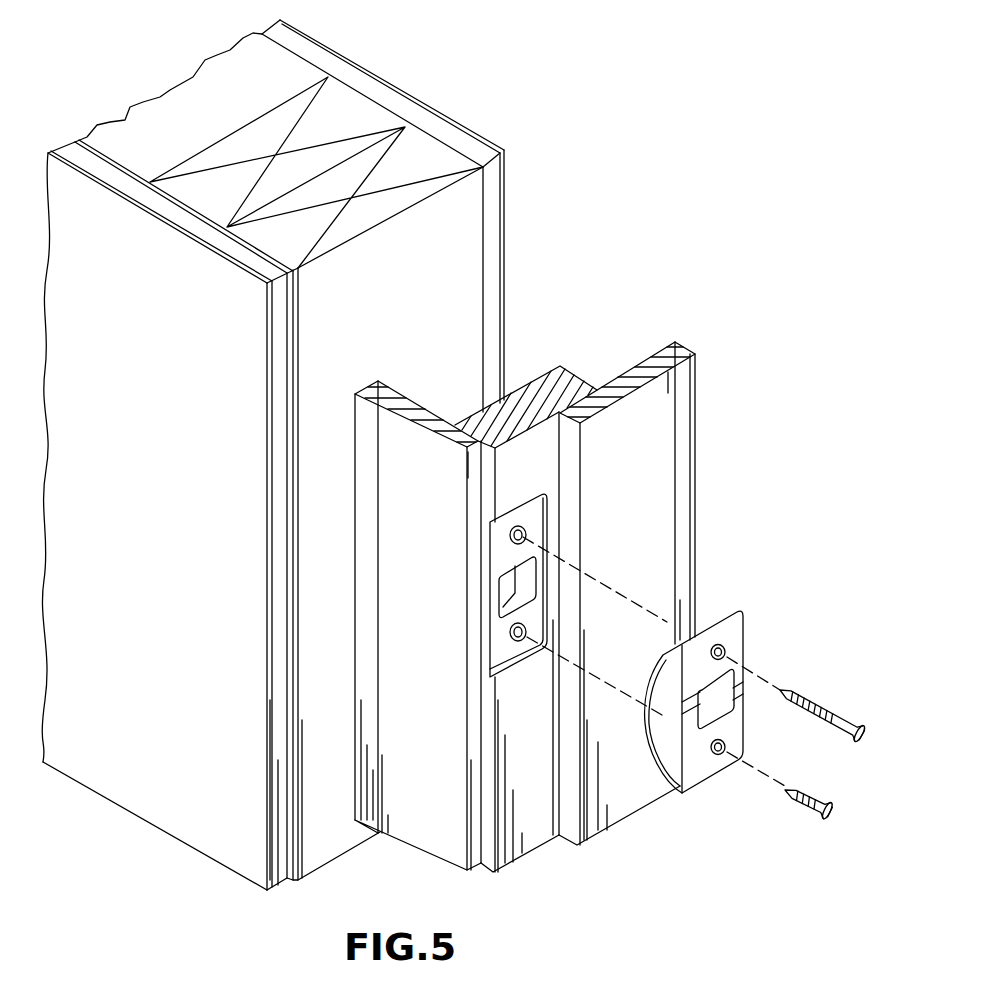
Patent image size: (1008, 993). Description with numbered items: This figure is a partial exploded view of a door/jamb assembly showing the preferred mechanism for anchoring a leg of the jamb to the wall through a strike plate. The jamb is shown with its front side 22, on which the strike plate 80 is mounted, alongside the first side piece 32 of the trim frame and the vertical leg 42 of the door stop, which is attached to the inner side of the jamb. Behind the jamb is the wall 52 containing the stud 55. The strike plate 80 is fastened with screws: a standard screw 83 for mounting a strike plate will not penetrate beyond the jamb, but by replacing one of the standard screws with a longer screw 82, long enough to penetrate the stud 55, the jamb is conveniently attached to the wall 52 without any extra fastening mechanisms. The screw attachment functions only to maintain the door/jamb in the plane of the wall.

The wall 52 is at (363, 64).
The stud 55 is at (427, 157).
The first side piece 32 is at (368, 457).
The front side 22 is at (532, 460).
The vertical leg 42 is at (680, 410).
The strike plate 80 is at (745, 612).
The screw 82 is at (830, 708).
The standard screw 83 is at (818, 815).